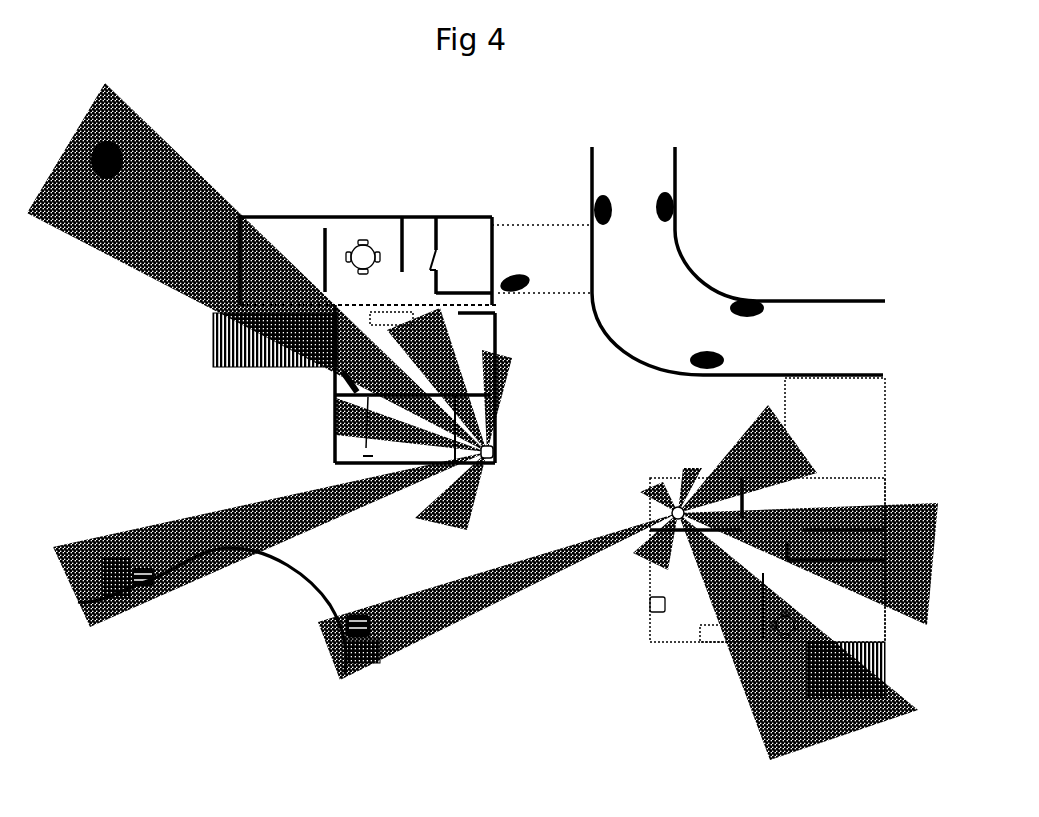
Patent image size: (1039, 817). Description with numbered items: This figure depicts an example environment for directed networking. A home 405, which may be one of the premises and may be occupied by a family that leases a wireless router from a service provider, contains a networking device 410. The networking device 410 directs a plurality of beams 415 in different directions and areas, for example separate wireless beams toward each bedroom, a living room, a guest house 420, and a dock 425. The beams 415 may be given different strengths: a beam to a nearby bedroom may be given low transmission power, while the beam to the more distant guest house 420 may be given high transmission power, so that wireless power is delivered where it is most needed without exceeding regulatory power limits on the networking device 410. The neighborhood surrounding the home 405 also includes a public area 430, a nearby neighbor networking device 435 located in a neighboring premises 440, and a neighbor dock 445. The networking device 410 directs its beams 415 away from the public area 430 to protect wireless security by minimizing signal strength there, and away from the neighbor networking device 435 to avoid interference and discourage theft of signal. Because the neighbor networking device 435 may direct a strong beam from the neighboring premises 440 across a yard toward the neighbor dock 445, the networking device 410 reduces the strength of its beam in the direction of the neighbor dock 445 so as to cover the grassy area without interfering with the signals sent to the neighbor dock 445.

The home 405 is at (437, 216).
The networking device 410 is at (497, 452).
The beams 415 is at (460, 362).
The guest house 420 is at (118, 168).
The dock 425 is at (132, 543).
The public area 430 is at (655, 285).
The neighbor networking device 435 is at (672, 500).
The second building floor plan 440 is at (672, 627).
The neighbor dock 445 is at (367, 612).